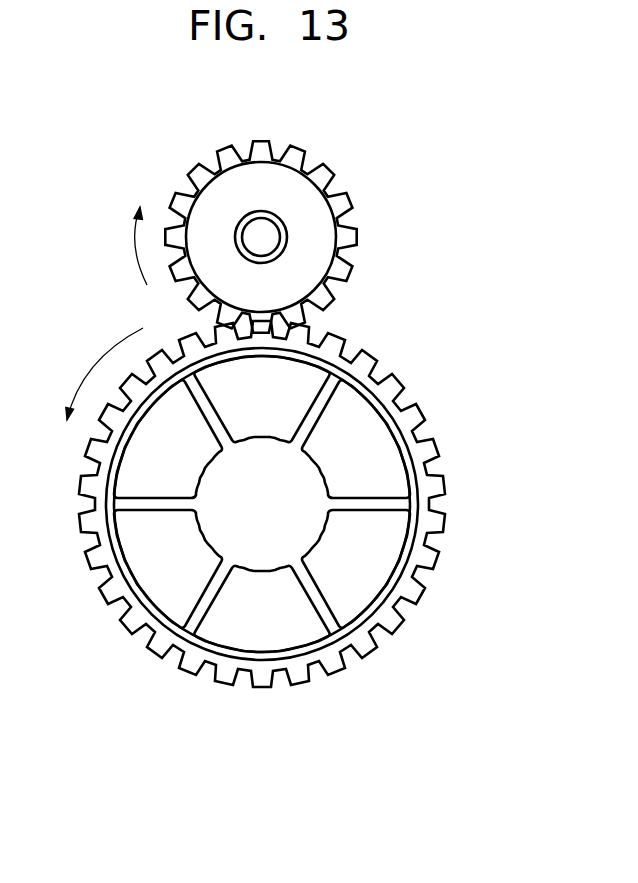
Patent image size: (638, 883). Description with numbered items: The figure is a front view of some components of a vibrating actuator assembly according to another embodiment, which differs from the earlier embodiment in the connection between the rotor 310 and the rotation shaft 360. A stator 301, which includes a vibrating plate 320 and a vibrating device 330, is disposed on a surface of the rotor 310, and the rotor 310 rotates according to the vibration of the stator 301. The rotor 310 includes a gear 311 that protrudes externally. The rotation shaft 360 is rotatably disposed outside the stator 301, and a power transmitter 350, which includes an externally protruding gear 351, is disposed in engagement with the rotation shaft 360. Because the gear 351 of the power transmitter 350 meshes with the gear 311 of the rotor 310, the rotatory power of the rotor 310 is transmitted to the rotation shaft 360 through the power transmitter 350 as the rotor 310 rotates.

The stator 301 is at (341, 504).
The rotor 310 is at (324, 546).
The gear 311 is at (218, 684).
The vibrating plate 320 is at (403, 503).
The vibrating device 330 is at (390, 535).
The power transmitter 350 is at (298, 236).
The gear 351 is at (345, 208).
The rotation shaft 360 is at (267, 233).